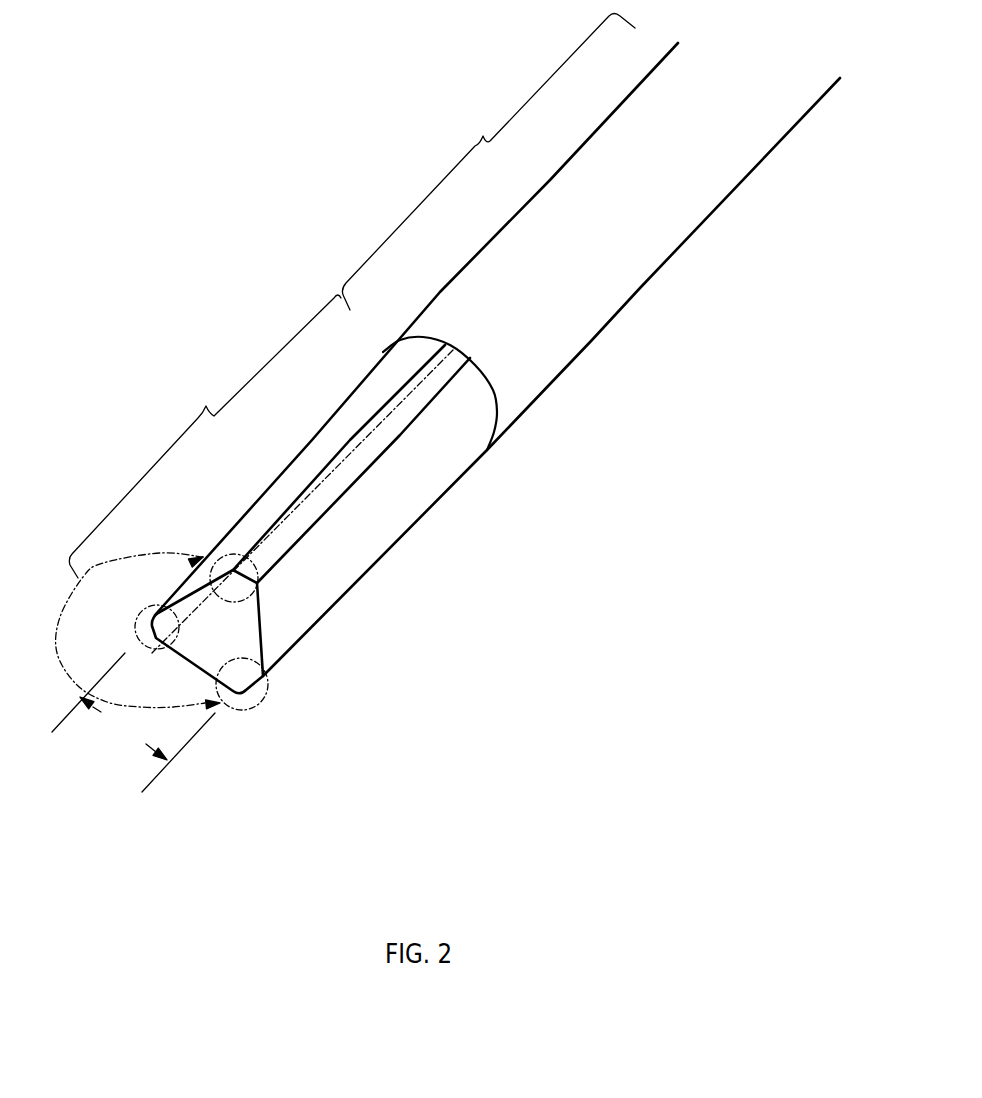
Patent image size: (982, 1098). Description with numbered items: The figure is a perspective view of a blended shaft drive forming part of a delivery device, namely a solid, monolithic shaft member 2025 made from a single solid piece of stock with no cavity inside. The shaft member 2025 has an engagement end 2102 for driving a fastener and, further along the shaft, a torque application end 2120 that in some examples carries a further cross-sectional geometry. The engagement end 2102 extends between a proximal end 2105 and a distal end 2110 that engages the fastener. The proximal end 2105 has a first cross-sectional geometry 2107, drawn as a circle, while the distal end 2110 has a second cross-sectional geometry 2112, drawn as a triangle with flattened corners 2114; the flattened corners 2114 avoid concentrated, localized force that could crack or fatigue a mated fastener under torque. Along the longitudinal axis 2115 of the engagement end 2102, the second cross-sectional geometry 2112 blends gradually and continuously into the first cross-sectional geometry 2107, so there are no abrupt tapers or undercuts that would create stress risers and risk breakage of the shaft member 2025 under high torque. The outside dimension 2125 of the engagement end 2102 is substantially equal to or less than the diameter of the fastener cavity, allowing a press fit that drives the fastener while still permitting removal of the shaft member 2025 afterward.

The solid, monolithic shaft member 2025 is at (219, 48).
The torque application end 2120 is at (488, 162).
The engagement end 2102 is at (205, 436).
The first cross-sectional geometry 2107 is at (491, 371).
The proximal end 2105 is at (508, 461).
The longitudinal axis 2115 is at (357, 455).
The second cross-sectional geometry 2112 is at (264, 630).
The flattened corners 2114 is at (118, 633).
The distal end 2110 is at (300, 713).
The outside dimension 2125 is at (133, 722).